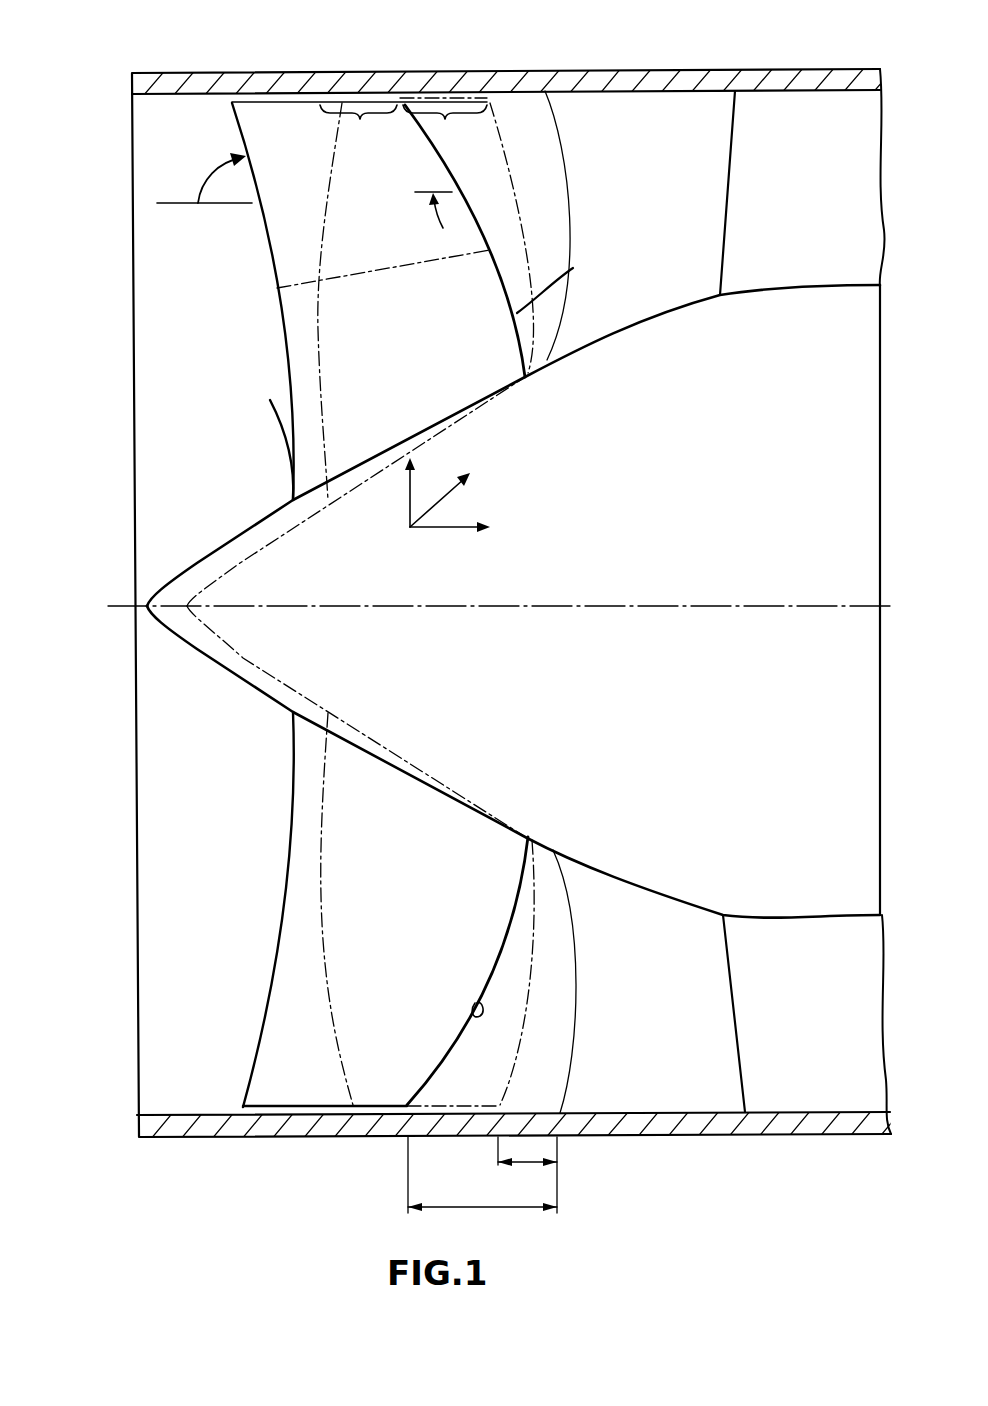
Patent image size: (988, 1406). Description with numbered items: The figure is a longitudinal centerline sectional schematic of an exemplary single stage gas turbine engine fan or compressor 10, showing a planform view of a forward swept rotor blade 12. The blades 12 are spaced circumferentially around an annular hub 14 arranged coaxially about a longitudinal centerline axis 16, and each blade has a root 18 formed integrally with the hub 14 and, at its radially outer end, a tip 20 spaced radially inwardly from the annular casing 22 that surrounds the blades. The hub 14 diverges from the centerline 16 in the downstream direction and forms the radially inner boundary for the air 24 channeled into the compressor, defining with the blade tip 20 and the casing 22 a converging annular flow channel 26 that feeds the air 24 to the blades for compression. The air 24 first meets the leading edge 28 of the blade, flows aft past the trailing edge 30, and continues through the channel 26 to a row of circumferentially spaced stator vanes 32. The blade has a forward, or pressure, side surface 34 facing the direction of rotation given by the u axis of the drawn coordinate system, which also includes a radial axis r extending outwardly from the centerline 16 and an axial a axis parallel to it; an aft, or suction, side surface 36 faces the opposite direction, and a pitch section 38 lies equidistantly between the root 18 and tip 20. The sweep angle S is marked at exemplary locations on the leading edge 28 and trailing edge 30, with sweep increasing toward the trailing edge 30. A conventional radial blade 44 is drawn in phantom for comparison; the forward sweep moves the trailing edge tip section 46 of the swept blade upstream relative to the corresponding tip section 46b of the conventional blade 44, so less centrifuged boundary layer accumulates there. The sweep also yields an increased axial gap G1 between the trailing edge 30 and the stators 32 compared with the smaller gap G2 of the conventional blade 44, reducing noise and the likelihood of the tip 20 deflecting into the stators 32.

The compressor 10 is at (694, 58).
The rotor blade 12 is at (258, 262).
The annular hub 14 is at (197, 560).
The longitudinal centerline axis 16 is at (617, 603).
The root 18 is at (377, 458).
The tip 20 is at (237, 123).
The annular casing 22 is at (223, 72).
The air 24 is at (115, 370).
The converging annular flow channel 26 is at (235, 380).
The leading edge 28 is at (287, 387).
The trailing edge 30 is at (573, 268).
The stator vanes 32 is at (664, 231).
The pressure side surface 34 is at (367, 822).
The suction side surface 36 is at (340, 422).
The pitch section 38 is at (348, 268).
The conventional blade 44 is at (317, 317).
The trailing edge tip section 46 is at (358, 128).
The trailing edge tip section of conventional blade 46b is at (445, 126).
The sweep angle S is at (218, 168).
The radial axis r is at (408, 495).
The u-axis u is at (452, 452).
The axial axis a is at (450, 530).
The axial gap G1 is at (485, 1207).
The axial gap G2 is at (528, 1162).